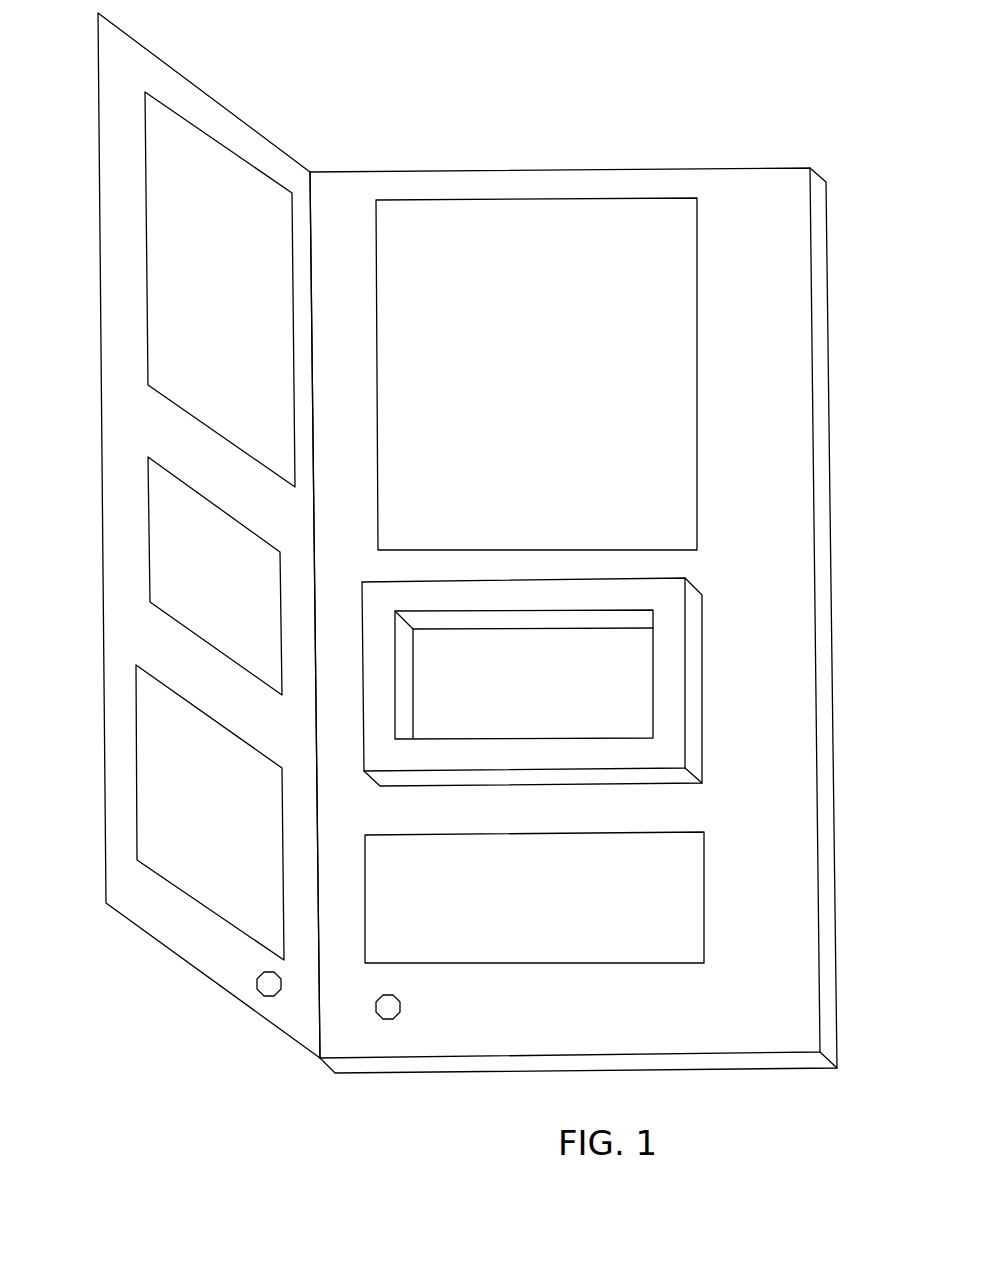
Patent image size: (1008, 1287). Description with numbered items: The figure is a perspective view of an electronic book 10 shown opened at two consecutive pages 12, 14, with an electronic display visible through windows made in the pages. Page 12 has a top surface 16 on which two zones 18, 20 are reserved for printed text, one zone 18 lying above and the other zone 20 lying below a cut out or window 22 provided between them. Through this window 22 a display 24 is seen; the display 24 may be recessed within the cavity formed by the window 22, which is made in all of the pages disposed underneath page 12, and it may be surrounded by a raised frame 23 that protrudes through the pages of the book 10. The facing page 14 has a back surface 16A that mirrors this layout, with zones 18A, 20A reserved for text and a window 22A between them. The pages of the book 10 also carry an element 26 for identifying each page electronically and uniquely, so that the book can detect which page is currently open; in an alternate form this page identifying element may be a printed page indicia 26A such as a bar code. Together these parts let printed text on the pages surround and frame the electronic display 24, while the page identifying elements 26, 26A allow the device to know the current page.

The electronic book 10 is at (742, 111).
The page 12 is at (708, 185).
The page 14 is at (268, 163).
The top surface 16 is at (783, 360).
The back surface 16A is at (133, 418).
The zone 18 is at (632, 422).
The zone 18A is at (210, 182).
The zone 20 is at (645, 883).
The zone 20A is at (172, 852).
The window 22 is at (655, 693).
The window 22A is at (232, 588).
The raised frame 23 is at (668, 745).
The display 24 is at (633, 655).
The element 26 is at (395, 1022).
The printed page indicia 26A is at (273, 1000).